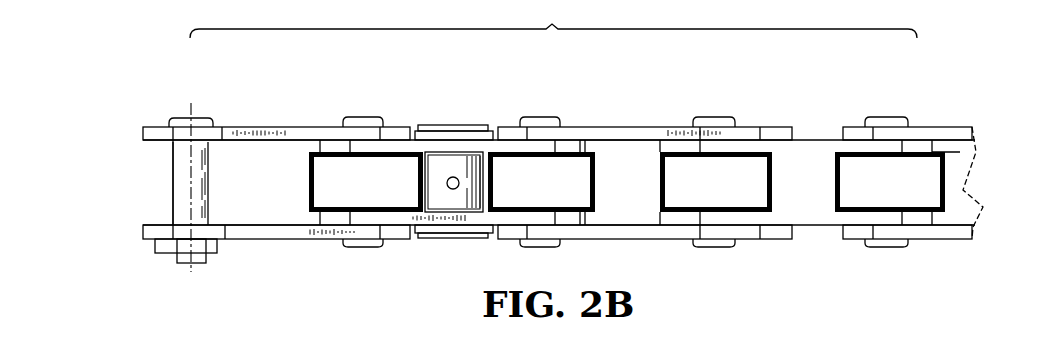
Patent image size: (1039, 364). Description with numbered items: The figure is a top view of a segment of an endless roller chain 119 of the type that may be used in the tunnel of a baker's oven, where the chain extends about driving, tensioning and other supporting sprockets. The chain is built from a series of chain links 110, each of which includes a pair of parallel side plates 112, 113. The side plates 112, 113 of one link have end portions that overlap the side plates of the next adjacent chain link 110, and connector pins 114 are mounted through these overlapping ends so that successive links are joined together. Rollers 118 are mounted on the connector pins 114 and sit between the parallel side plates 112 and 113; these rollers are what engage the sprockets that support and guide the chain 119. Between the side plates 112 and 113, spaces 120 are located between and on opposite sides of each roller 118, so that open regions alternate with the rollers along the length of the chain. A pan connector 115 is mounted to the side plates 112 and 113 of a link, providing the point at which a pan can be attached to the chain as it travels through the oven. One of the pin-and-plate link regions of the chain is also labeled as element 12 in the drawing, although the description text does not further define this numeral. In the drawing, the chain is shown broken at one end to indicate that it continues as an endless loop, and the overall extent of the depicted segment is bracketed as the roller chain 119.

The chain 12 is at (662, 127).
The chain link 110 is at (285, 127).
The side plate 112 is at (222, 127).
The side plate 113 is at (263, 239).
The connector pin 114 is at (368, 118).
The pan connector 115 is at (460, 240).
The roller 118 is at (627, 182).
The endless roller chain 119 is at (553, 19).
The space 120 is at (652, 197).